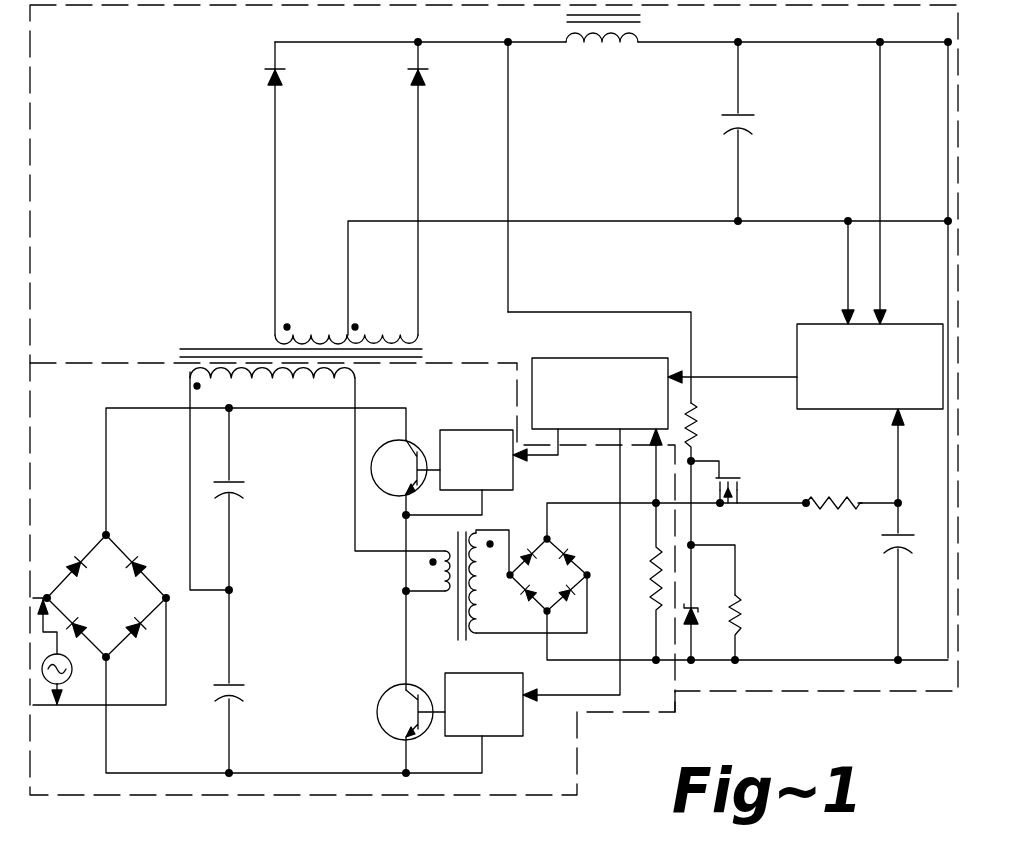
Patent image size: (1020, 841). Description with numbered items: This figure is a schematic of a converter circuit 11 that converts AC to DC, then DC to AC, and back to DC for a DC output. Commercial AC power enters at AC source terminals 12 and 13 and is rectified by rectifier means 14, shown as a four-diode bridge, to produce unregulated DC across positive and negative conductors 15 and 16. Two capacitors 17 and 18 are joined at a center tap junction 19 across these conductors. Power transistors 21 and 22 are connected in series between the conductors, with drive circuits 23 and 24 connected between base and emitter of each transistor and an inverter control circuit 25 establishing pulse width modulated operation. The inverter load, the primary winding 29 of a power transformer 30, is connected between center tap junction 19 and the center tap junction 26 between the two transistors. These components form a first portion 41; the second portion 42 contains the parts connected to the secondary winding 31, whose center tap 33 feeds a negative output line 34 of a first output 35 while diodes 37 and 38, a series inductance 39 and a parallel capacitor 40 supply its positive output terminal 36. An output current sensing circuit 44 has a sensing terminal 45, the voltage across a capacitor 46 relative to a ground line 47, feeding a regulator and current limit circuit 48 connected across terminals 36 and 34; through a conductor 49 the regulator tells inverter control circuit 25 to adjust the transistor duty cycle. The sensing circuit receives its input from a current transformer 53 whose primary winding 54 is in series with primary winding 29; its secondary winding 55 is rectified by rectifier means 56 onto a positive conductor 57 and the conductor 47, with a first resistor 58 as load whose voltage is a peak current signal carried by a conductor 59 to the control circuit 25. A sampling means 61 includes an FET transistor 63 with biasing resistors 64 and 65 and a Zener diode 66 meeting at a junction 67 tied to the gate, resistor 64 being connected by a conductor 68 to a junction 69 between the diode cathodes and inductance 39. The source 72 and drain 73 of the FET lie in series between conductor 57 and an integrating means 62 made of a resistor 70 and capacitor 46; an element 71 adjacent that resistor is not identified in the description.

The converter circuit 11 is at (340, 602).
The AC source terminal 12 is at (47, 596).
The AC source terminal 13 is at (60, 706).
The rectifier means 14 is at (119, 606).
The positive conductor 15 is at (135, 410).
The negative conductor 16 is at (165, 773).
The capacitor 17 is at (240, 482).
The capacitor 18 is at (242, 688).
The center tap junction 19 is at (233, 592).
The transistor 21 is at (390, 495).
The transistor 22 is at (378, 703).
The drive circuit 23 is at (455, 430).
The drive circuit 24 is at (500, 673).
The inverter control circuit 25 is at (614, 358).
The center tap junction 26 is at (398, 592).
The primary winding 29 is at (290, 378).
The power transformer 30 is at (422, 345).
The secondary winding 31 is at (405, 330).
The center tap 33 is at (335, 328).
The negative output line 34 is at (578, 221).
The first output 35 is at (948, 116).
The positive output terminal 36 is at (882, 44).
The diode 37 is at (280, 73).
The diode 38 is at (410, 80).
The series inductance 39 is at (585, 50).
The parallel capacitor 40 is at (748, 108).
The first portion 41 is at (578, 757).
The second portion 42 is at (795, 692).
The output current sensing circuit 44 is at (841, 557).
The sensing terminal 45 is at (900, 500).
The capacitor 46 is at (903, 538).
The ground line 47 is at (915, 658).
The regulator and current limit circuit 48 is at (906, 324).
The conductor 49 is at (728, 377).
The current transformer 53 is at (468, 636).
The primary winding 54 is at (440, 594).
The secondary winding 55 is at (493, 540).
The rectifier means 56 is at (561, 587).
The positive conductor 57 is at (575, 505).
The first resistor 58 is at (652, 556).
The conductor 59 is at (652, 477).
The sampling means 61 is at (718, 476).
The integrating means 62 is at (830, 508).
The FET transistor 63 is at (736, 478).
The resistor 64 is at (699, 428).
The resistor 65 is at (744, 598).
The Zener diode 66 is at (698, 628).
The junction 67 is at (694, 550).
The conductor 68 is at (600, 312).
The junction 69 is at (507, 40).
The resistor 70 is at (856, 503).
The resistor terminal 71 is at (806, 495).
The source 72 is at (719, 506).
The drain 73 is at (740, 508).